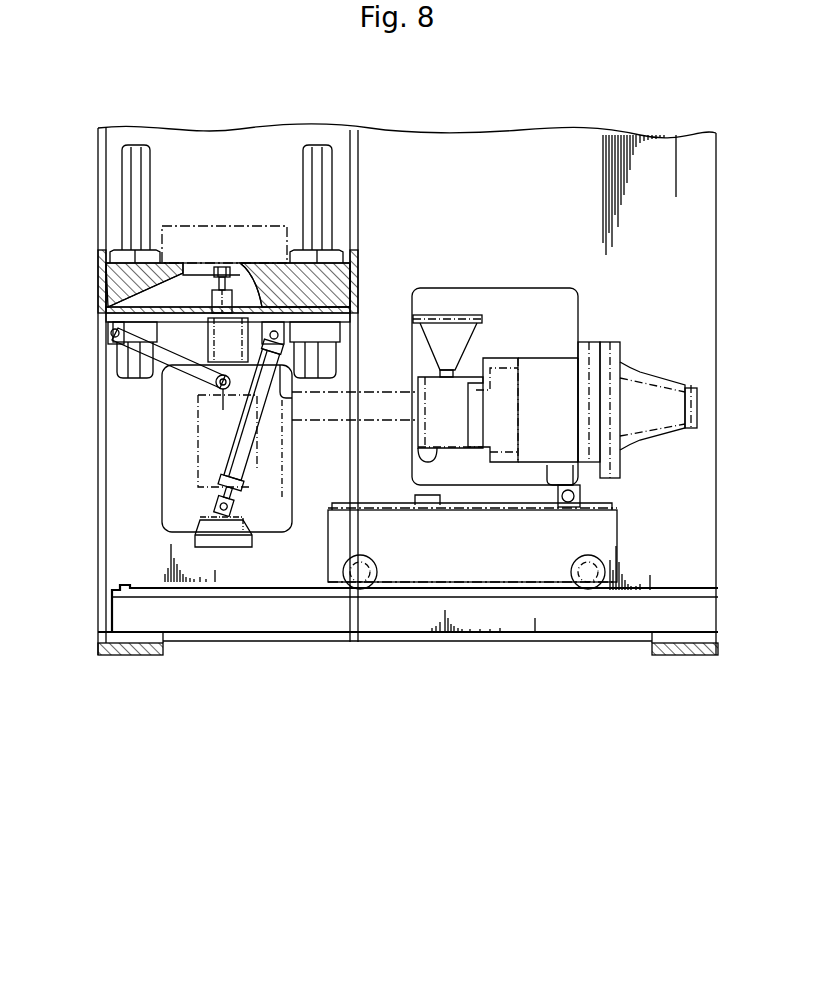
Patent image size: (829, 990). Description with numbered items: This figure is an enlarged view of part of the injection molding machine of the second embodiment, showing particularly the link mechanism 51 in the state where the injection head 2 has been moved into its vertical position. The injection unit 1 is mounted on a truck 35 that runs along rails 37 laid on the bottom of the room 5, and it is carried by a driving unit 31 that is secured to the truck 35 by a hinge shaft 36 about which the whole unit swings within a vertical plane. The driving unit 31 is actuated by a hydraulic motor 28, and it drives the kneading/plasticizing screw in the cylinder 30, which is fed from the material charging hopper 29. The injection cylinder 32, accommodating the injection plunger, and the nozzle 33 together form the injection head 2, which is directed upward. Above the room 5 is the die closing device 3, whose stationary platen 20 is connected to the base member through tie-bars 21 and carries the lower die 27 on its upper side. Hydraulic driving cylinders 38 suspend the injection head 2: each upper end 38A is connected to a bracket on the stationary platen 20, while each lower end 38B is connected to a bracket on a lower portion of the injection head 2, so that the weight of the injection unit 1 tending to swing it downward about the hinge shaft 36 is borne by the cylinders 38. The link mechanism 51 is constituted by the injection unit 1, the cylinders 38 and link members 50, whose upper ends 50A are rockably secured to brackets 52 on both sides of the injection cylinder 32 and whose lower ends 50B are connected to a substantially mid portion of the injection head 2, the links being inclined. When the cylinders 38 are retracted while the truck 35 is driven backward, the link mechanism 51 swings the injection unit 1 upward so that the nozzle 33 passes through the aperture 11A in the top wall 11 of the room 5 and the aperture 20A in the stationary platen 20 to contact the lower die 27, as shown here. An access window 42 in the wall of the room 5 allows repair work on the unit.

The injection unit 1 is at (533, 355).
The injection head 2 is at (195, 462).
The die closing device 3 is at (118, 152).
The room 5 is at (135, 555).
The top wall 11 is at (106, 318).
The aperture 11A is at (104, 308).
The stationary platen 20 is at (114, 273).
The aperture 20A is at (125, 291).
The tie-bars 21 is at (122, 194).
The lower die 27 is at (172, 225).
The hydraulic motor 28 is at (672, 385).
The material charging hopper 29 is at (458, 318).
The cylinder 30 is at (388, 422).
The driving unit 31 is at (570, 356).
The injection cylinder 32 is at (208, 330).
The nozzle 33 is at (222, 266).
The truck 35 is at (555, 570).
The hinge shaft 36 is at (576, 496).
The rails 37 is at (430, 620).
The hydraulic driving cylinders 38 is at (262, 424).
The upper end 38A is at (286, 337).
The lower end 38B is at (262, 513).
The access window 42 is at (352, 296).
The link members 50 is at (178, 378).
The upper ends 50A is at (110, 344).
The lower ends 50B is at (226, 438).
The link mechanism 51 is at (200, 402).
The brackets 52 is at (108, 330).